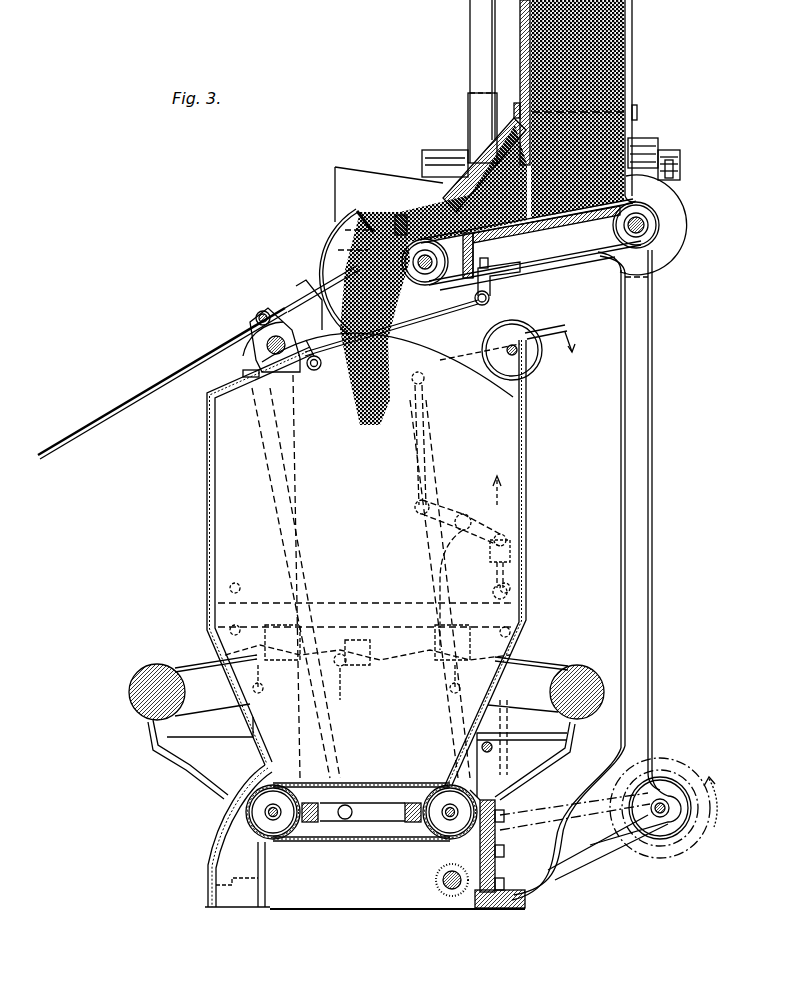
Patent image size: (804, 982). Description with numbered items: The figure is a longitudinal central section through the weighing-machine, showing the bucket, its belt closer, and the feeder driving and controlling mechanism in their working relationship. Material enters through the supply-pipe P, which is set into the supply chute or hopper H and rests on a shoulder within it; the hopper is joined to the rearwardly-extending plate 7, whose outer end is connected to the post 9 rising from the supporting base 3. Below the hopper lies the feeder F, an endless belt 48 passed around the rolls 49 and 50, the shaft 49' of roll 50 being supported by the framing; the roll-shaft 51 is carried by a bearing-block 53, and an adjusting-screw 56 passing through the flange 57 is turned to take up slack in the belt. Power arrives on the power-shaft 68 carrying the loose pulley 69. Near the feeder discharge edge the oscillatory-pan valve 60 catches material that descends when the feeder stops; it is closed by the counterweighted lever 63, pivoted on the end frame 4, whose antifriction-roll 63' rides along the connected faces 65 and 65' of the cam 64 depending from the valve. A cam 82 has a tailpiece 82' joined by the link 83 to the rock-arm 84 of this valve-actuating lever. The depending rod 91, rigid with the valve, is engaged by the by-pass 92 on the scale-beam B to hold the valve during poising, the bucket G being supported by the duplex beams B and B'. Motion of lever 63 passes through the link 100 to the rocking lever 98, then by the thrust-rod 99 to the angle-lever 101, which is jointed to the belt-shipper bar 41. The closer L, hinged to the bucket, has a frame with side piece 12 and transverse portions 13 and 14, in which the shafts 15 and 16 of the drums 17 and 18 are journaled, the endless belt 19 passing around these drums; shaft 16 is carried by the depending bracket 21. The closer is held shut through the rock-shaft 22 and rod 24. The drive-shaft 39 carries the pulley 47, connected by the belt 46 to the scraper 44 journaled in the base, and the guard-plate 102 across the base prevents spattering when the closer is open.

The supply-pipe P is at (632, 20).
The pulley 69 is at (470, 100).
The supply chute or hopper H is at (630, 142).
The power-shaft 68 is at (682, 160).
The roll or drum 50 is at (650, 216).
The shaft 49' is at (669, 226).
The roll or drum 49 is at (408, 237).
The roll-shaft 51 is at (400, 215).
The bearing-block 53 is at (440, 238).
The feeder F is at (510, 212).
The rearwardly-extending plate 7 is at (582, 250).
The endless belt or apron 48 is at (582, 265).
The cam 82 is at (511, 279).
The adjusting-screw 56 is at (487, 277).
The tailpiece 82' is at (494, 305).
The flange 57 is at (476, 300).
The link 83 is at (450, 306).
The rock-arm 84 is at (407, 347).
The valve 60 is at (330, 250).
The cam-face 65' is at (298, 282).
The cam 64 is at (295, 282).
The cam-face 65 is at (252, 303).
The transverse rock-shaft 22 is at (240, 350).
The rod 24 is at (262, 364).
The depending rod 91 is at (100, 417).
The load-receiver or bucket G is at (208, 516).
The antifriction-roll 63' is at (299, 375).
The end frame or column 4 is at (307, 443).
The valve-closing actuator or lever 63 is at (507, 362).
The link 100 is at (430, 431).
The rocking lever 98 is at (442, 495).
The thrust-rod 99 is at (495, 557).
The by-pass 92 is at (333, 642).
The scale-beam B is at (193, 727).
The scale-beam B' is at (540, 728).
The belt-shipper bar 41 is at (493, 743).
The angle-lever 101 is at (523, 737).
The post or standard 9 is at (647, 466).
The pulley or wheel 47 is at (673, 787).
The drive-shaft 39 is at (673, 818).
The belt or rope 46 is at (600, 865).
The supporting base or bed 3 is at (293, 893).
The supporting drum or roll 18 is at (503, 815).
The closer L is at (361, 821).
The shaft 15 is at (268, 810).
The supporting drum or roll 17 is at (260, 820).
The transverse portion 14 is at (420, 830).
The roll-shaft 16 is at (453, 820).
The longitudinal side piece 12 is at (385, 810).
The transverse portion 13 is at (311, 826).
The endless belt or apron 19 is at (343, 842).
The arm or bracket 21 is at (420, 791).
The scraper 44 is at (440, 884).
The guard-plate 102 is at (208, 865).